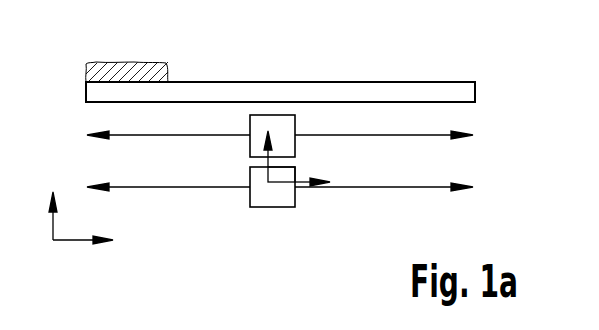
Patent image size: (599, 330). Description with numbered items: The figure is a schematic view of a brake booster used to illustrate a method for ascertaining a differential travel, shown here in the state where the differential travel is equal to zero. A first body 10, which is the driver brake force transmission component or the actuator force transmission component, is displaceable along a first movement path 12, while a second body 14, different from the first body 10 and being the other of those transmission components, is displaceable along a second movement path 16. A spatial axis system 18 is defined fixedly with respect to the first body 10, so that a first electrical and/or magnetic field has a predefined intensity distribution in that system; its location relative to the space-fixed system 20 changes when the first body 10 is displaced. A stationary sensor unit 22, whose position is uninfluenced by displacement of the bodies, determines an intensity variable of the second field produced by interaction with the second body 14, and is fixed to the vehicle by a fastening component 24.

The first body 10 is at (277, 202).
The first movement path 12 is at (192, 187).
The second body 14 is at (250, 143).
The second movement path 16 is at (155, 135).
The spatial axis system 18 is at (284, 184).
The space-fixed system 20 is at (72, 241).
The sensor unit 22 is at (412, 92).
The fastening component 24 is at (132, 75).